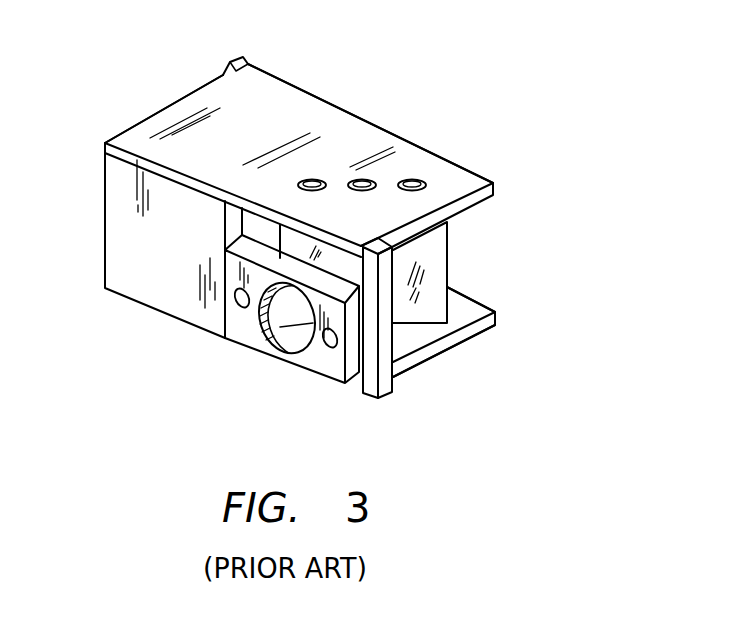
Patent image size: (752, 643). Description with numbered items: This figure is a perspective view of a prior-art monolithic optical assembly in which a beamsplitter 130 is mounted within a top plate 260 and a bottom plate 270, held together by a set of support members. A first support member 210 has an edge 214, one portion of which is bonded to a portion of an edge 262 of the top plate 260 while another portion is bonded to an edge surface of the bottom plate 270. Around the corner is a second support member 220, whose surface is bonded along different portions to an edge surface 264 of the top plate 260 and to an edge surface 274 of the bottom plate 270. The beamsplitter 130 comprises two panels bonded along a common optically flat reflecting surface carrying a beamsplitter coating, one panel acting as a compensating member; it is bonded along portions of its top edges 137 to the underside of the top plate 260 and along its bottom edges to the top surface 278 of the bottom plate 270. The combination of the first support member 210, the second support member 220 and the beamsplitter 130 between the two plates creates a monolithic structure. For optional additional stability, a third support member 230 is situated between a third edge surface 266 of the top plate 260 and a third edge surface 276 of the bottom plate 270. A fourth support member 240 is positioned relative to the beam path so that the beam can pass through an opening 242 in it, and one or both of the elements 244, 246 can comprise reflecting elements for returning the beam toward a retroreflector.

The first support member 210 is at (232, 64).
The edge of support member 214 is at (226, 75).
The second support member 220 is at (115, 253).
The third support member 230 is at (383, 347).
The fourth support member 240 is at (341, 390).
The opening 242 is at (281, 327).
The reflecting element 244 is at (326, 344).
The reflecting element 246 is at (237, 300).
The top plate 260 is at (290, 105).
The edge of top plate 262 is at (168, 107).
The edge surface of top plate 264 is at (259, 207).
The third edge surface of top plate 266 is at (494, 199).
The bottom plate 270 is at (499, 311).
The edge surface of bottom plate 274 is at (362, 384).
The third edge surface of bottom plate 276 is at (446, 347).
The top surface of bottom plate 278 is at (460, 312).
The beamsplitter 130 is at (455, 243).
The top edges of beamsplitter 137 is at (368, 180).